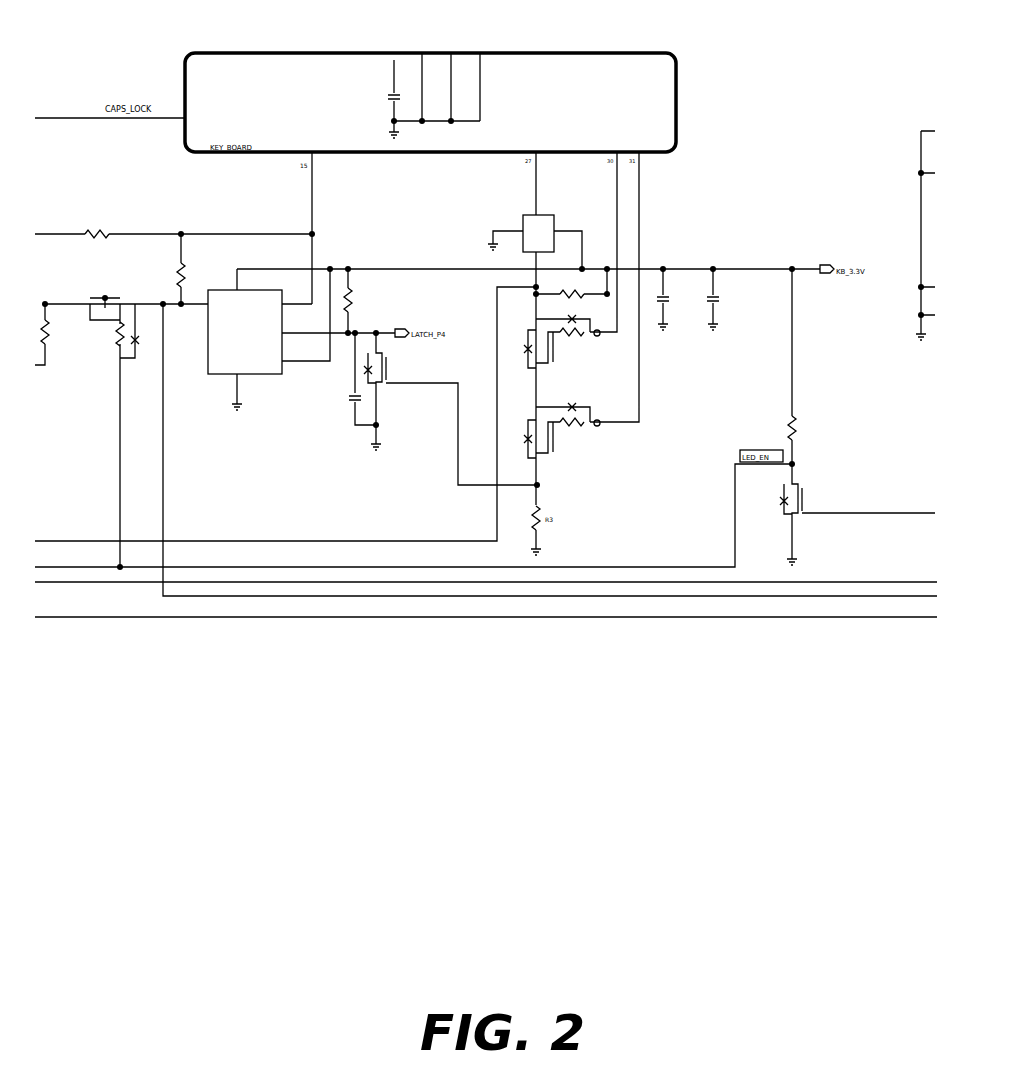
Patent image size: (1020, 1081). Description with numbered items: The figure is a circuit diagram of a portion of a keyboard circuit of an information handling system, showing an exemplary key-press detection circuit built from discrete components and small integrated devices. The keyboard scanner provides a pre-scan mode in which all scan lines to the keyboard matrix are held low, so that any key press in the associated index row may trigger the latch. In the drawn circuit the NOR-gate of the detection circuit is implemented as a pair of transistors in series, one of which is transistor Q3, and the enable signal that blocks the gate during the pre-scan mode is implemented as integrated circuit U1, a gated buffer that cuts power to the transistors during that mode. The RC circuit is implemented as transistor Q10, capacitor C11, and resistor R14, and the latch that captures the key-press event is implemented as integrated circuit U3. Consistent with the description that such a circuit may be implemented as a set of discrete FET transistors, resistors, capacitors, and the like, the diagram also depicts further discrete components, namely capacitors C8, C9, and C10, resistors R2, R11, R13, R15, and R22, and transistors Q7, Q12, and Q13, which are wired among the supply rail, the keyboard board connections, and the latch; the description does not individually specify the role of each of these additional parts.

The capacitor C10 is at (423, 95).
The resistor R13 is at (173, 234).
The resistor R14 is at (189, 269).
The resistor R11 is at (50, 334).
The P-FET transistor Q12 is at (89, 424).
The integrated circuit U3 is at (297, 339).
The resistor R15 is at (356, 301).
The transistor Q10 is at (450, 409).
The capacitor C11 is at (353, 379).
The integrated circuit U1 is at (540, 240).
The resistor R2 is at (571, 288).
The capacitor C8 is at (671, 299).
The capacitor C9 is at (721, 299).
The transistor Q3 is at (578, 271).
The P-FET transistor Q7 is at (581, 316).
The resistor R22 is at (800, 366).
The N-FET transistor Q13 is at (857, 514).